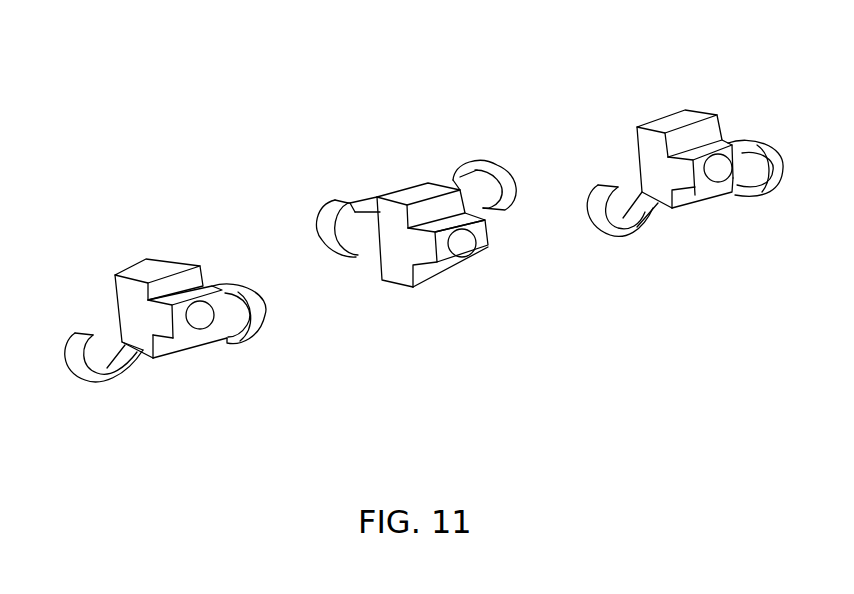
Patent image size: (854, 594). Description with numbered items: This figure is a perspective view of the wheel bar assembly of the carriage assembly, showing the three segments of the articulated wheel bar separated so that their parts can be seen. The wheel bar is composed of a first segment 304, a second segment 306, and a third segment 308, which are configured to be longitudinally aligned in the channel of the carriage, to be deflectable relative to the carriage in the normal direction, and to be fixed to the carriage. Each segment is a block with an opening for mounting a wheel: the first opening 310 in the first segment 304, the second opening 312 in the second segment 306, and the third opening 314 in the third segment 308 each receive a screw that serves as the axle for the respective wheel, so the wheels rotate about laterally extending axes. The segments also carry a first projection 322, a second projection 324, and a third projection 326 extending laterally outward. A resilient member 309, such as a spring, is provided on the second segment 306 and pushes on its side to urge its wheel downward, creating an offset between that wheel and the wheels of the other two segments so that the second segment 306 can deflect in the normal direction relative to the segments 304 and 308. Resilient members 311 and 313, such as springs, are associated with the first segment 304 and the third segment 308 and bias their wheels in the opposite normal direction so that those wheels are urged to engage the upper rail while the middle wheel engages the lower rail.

The first segment 304 is at (160, 263).
The second segment 306 is at (401, 271).
The third segment 308 is at (670, 120).
The resilient member 309 is at (330, 207).
The first opening 310 is at (202, 320).
The resilient member 311 is at (75, 342).
The second opening 312 is at (462, 247).
The resilient member 313 is at (597, 192).
The third opening 314 is at (718, 170).
The first projection 322 is at (166, 333).
The second projection 324 is at (483, 247).
The third projection 326 is at (698, 183).